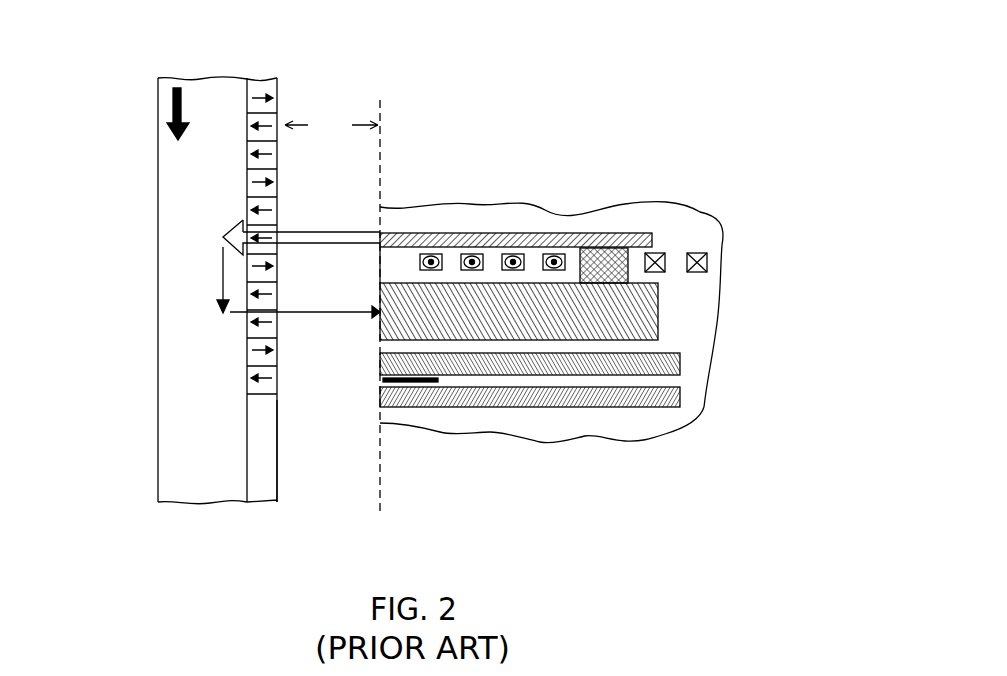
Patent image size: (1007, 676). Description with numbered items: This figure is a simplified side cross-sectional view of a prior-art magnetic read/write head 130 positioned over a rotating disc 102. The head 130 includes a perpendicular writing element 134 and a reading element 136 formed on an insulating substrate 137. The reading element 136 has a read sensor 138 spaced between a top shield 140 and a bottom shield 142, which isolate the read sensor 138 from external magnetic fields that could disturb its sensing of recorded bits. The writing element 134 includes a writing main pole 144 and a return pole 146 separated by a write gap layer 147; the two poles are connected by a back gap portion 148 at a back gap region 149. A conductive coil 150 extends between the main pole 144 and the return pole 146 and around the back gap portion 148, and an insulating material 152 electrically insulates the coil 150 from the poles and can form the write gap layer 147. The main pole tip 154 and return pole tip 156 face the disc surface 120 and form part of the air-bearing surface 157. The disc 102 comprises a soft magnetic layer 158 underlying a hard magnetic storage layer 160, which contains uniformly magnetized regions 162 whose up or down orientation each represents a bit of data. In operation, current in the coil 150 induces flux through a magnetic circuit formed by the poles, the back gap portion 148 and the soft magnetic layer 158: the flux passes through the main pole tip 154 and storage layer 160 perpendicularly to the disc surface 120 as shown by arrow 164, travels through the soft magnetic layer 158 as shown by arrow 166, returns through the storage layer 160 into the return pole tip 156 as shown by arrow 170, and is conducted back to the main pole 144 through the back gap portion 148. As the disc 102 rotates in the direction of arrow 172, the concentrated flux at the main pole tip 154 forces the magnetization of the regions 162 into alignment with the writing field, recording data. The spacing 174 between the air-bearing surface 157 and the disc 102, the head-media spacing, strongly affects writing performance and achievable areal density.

The disc 102 is at (228, 80).
The disc surface 120 is at (278, 485).
The magnetic read/write head 130 is at (763, 121).
The perpendicular writing element 134 is at (600, 226).
The reading element 136 is at (583, 390).
The insulating substrate 137 is at (653, 428).
The read sensor 138 is at (380, 381).
The top shield 140 is at (678, 354).
The bottom shield 142 is at (400, 398).
The writing main pole 144 is at (652, 231).
The return pole 146 is at (658, 302).
The write gap layer 147 is at (380, 262).
The back gap portion 148 is at (606, 255).
The back gap region 149 is at (645, 220).
The conductive coil 150 is at (475, 244).
The insulating material 152 is at (537, 265).
The main pole tip 154 is at (373, 242).
The return pole tip 156 is at (378, 336).
The air-bearing surface 157 is at (380, 152).
The soft magnetic layer 158 is at (173, 473).
The storage layer 160 is at (267, 497).
The uniformly magnetized regions 162 is at (260, 90).
The arrow 164 is at (233, 233).
The arrow 166 is at (223, 273).
The arrow 170 is at (303, 312).
The arrow 172 is at (170, 103).
The spacing 174 is at (331, 125).